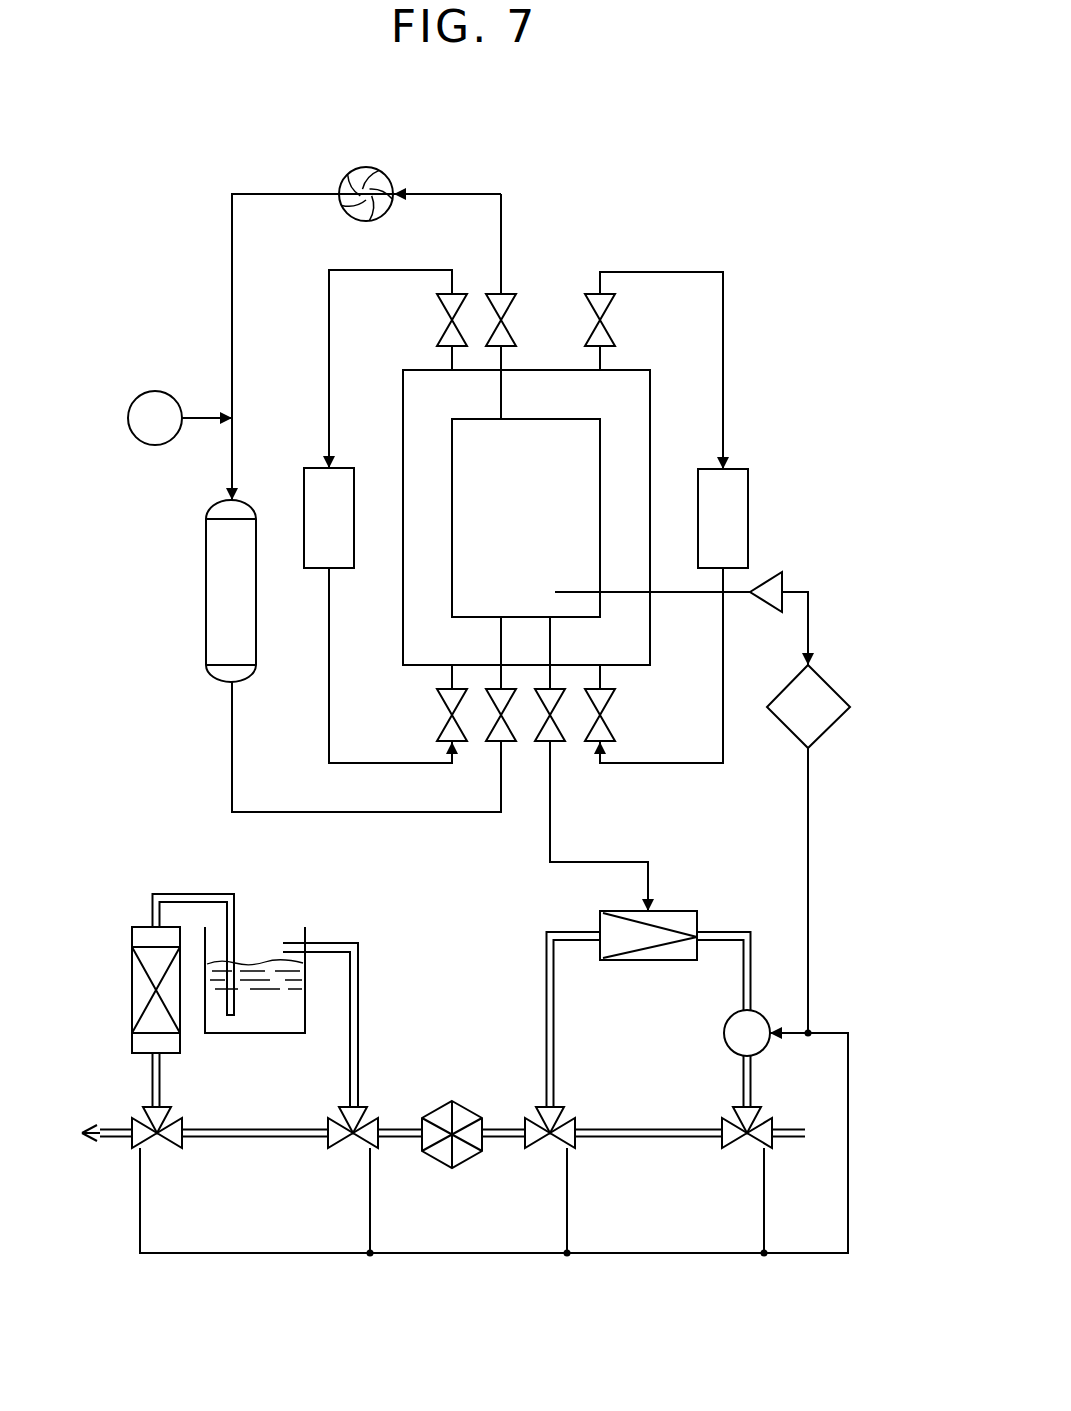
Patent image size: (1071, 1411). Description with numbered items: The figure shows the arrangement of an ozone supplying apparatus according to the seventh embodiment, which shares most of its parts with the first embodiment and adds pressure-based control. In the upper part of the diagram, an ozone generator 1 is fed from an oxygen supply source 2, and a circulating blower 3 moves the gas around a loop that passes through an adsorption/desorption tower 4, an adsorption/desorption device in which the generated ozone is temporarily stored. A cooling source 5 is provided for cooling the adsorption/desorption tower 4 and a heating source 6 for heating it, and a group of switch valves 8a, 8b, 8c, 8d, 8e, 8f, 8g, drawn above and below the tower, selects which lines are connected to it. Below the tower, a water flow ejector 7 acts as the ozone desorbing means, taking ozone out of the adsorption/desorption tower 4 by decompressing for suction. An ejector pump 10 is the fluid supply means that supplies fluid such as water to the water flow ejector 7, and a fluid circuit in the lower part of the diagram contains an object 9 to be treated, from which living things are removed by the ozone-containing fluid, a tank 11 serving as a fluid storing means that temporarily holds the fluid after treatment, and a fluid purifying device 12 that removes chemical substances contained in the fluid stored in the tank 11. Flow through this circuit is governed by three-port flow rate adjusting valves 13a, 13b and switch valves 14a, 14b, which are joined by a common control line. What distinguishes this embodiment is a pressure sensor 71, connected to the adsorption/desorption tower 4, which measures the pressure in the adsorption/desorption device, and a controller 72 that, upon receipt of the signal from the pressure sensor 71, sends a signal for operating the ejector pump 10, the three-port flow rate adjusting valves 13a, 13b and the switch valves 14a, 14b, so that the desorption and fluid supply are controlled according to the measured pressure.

The ozone generator 1 is at (222, 603).
The oxygen supply source 2 is at (152, 405).
The circulating blower 3 is at (356, 174).
The adsorption/desorption tower 4 is at (650, 418).
The cooling source 5 is at (315, 490).
The heating source 6 is at (740, 490).
The water flow ejector 7 is at (678, 918).
The switch valve 8a is at (455, 300).
The switch valve 8b is at (449, 728).
The switch valve 8c is at (503, 306).
The switch valve 8d is at (497, 728).
The switch valve 8e is at (598, 312).
The switch valve 8f is at (553, 735).
The switch valve 8g is at (603, 735).
The object to be treated 9 is at (456, 1108).
The ejector pump 10 is at (757, 1017).
The tank 11 is at (305, 982).
The fluid purifying device 12 is at (137, 985).
The three-port flow rate adjusting valve 13a is at (760, 1140).
The three-port flow rate adjusting valve 13b is at (573, 1140).
The switch valve 14a is at (363, 1140).
The switch valve 14b is at (175, 1140).
The pressure sensor 71 is at (778, 578).
The controller 72 is at (820, 700).